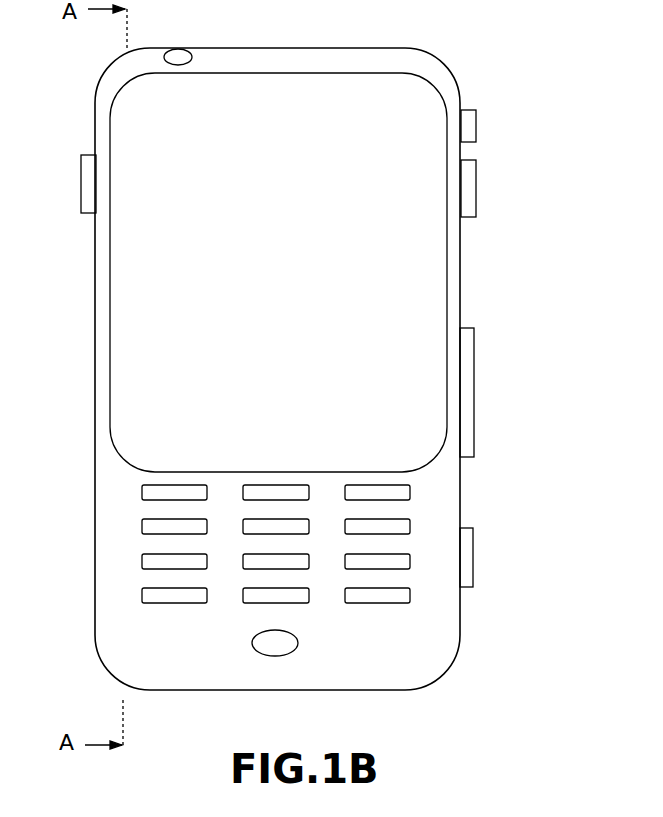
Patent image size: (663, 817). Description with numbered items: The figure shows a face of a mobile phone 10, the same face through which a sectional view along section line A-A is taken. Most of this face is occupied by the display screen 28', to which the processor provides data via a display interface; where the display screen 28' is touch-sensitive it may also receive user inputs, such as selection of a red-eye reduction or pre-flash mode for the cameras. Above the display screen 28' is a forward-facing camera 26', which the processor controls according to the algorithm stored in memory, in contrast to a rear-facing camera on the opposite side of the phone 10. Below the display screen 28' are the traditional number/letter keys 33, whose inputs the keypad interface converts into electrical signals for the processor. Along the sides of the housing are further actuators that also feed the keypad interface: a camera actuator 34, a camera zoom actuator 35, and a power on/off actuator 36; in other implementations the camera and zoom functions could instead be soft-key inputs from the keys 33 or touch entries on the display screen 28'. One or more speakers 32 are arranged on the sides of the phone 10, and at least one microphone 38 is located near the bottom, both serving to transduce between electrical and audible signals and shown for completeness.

The mobile phone 10 is at (62, 657).
The forward-facing camera 26' is at (206, 33).
The display screen 28' is at (323, 272).
The speakers 32 is at (80, 172).
The number/letter keys 33 is at (411, 616).
The camera actuator 34 is at (475, 555).
The camera zoom actuator 35 is at (476, 400).
The power on/off actuator 36 is at (478, 120).
The microphone 38 is at (275, 657).